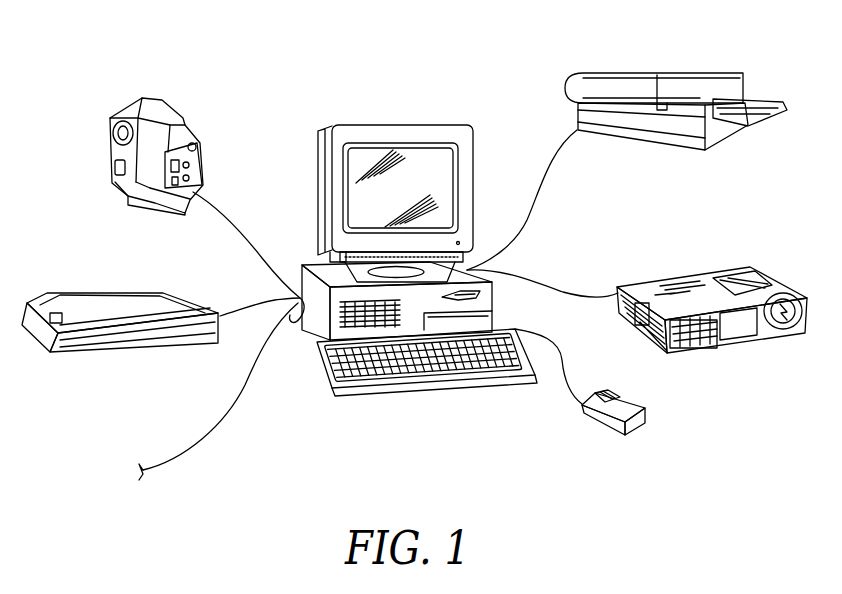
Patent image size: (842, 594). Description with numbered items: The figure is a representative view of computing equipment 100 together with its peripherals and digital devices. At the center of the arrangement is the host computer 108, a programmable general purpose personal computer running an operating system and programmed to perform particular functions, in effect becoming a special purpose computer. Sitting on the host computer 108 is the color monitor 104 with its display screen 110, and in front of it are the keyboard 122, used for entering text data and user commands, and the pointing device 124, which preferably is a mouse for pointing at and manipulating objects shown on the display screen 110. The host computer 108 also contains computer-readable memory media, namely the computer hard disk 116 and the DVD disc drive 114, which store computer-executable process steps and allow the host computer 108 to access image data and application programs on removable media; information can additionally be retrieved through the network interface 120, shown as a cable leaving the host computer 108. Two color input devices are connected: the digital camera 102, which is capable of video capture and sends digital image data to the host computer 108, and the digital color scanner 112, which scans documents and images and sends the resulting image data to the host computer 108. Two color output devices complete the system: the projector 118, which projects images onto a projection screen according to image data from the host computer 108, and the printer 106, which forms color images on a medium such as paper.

The computing equipment 100 is at (458, 102).
The digital camera 102 is at (191, 140).
The color monitor 104 is at (420, 174).
The printer 106 is at (612, 67).
The host computer 108 is at (453, 235).
The display screen 110 is at (445, 193).
The digital color scanner 112 is at (154, 348).
The DVD disc drive 114 is at (480, 297).
The computer hard disk 116 is at (490, 322).
The projector 118 is at (666, 260).
The network interface 120 is at (218, 394).
The keyboard 122 is at (385, 386).
The pointing device 124 is at (635, 430).